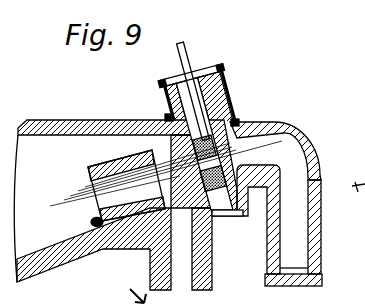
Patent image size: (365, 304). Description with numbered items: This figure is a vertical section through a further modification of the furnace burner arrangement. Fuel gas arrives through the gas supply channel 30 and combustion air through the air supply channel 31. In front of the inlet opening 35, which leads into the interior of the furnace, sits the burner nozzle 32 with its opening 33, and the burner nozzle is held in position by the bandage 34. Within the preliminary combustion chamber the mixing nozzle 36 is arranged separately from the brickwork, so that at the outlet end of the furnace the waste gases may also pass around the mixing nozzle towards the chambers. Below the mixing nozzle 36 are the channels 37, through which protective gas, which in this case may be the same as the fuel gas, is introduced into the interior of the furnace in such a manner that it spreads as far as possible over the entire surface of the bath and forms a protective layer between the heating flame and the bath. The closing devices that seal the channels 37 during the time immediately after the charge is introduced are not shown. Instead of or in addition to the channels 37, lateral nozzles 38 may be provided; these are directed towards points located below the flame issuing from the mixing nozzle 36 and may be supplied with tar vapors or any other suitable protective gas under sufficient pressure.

The gas supply channel 30 is at (292, 234).
The air supply channel 31 is at (148, 264).
The burner nozzle 32 is at (230, 124).
The opening 33 is at (292, 127).
The bandage 34 is at (222, 191).
The inlet opening 35 is at (182, 152).
The mixing nozzle 36 is at (98, 154).
The channels 37 is at (215, 227).
The lateral nozzles 38 is at (95, 226).